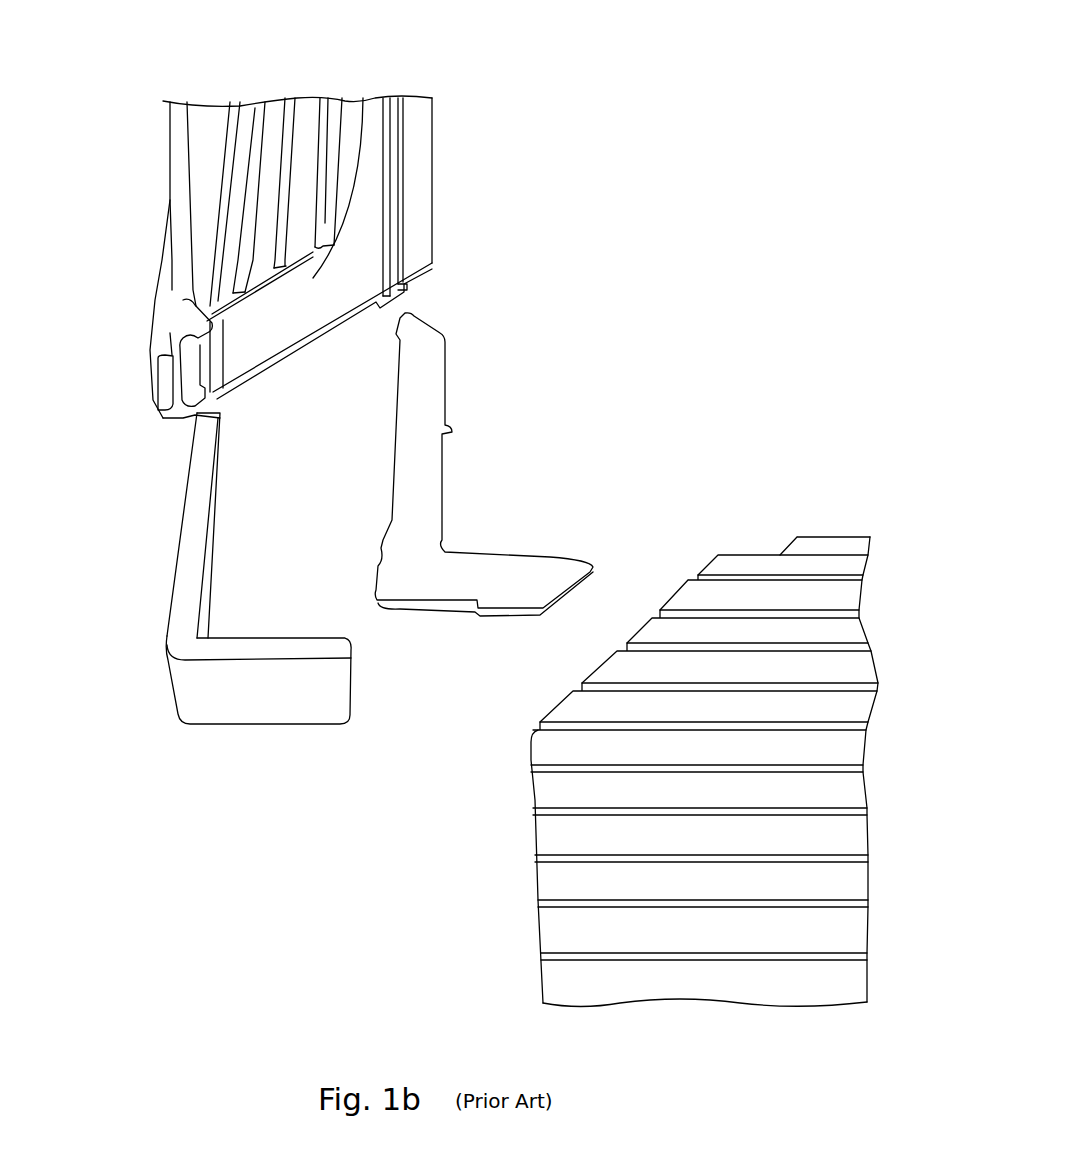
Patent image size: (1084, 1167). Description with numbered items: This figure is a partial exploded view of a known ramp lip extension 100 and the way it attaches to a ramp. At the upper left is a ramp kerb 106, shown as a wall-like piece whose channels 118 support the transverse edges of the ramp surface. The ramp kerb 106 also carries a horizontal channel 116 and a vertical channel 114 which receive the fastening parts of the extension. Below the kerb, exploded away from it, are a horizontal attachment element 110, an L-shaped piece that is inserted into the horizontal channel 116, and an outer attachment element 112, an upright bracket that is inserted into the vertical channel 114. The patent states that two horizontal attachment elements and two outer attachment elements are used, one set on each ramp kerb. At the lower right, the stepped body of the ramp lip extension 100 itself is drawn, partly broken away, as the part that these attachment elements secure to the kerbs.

The ramp lip extension 100 is at (853, 665).
The ramp kerb 106 is at (249, 117).
The horizontal attachment element 110 is at (423, 493).
The outer attachment element 112 is at (192, 530).
The vertical channel 114 is at (192, 350).
The horizontal channel 116 is at (418, 283).
The channel 118 is at (363, 98).